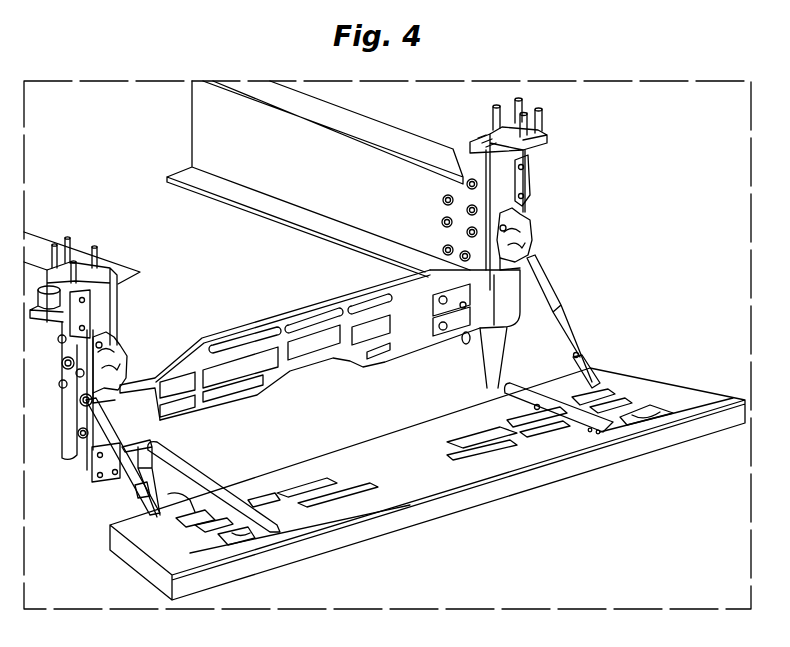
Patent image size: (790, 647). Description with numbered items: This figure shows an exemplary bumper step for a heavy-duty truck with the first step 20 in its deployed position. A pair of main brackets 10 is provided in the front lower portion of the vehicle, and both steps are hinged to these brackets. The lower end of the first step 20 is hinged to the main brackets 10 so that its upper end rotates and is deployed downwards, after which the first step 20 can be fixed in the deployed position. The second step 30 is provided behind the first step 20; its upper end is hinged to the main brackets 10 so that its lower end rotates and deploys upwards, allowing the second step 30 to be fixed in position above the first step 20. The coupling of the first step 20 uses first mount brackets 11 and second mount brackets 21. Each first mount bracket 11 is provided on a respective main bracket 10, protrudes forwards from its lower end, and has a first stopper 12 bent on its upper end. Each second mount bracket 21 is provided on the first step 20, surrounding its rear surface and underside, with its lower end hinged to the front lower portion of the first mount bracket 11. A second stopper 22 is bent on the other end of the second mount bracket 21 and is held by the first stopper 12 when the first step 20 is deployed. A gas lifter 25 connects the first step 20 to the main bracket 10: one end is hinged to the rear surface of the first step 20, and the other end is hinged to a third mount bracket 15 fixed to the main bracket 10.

The main bracket 10 is at (508, 177).
The first mount bracket 11 is at (112, 482).
The first stopper 12 is at (120, 452).
The third mount bracket 15 is at (527, 215).
The first step 20 is at (447, 472).
The second mount bracket 21 is at (183, 467).
The second stopper 22 is at (150, 440).
The gas lifter 25 is at (554, 302).
The second step 30 is at (310, 312).